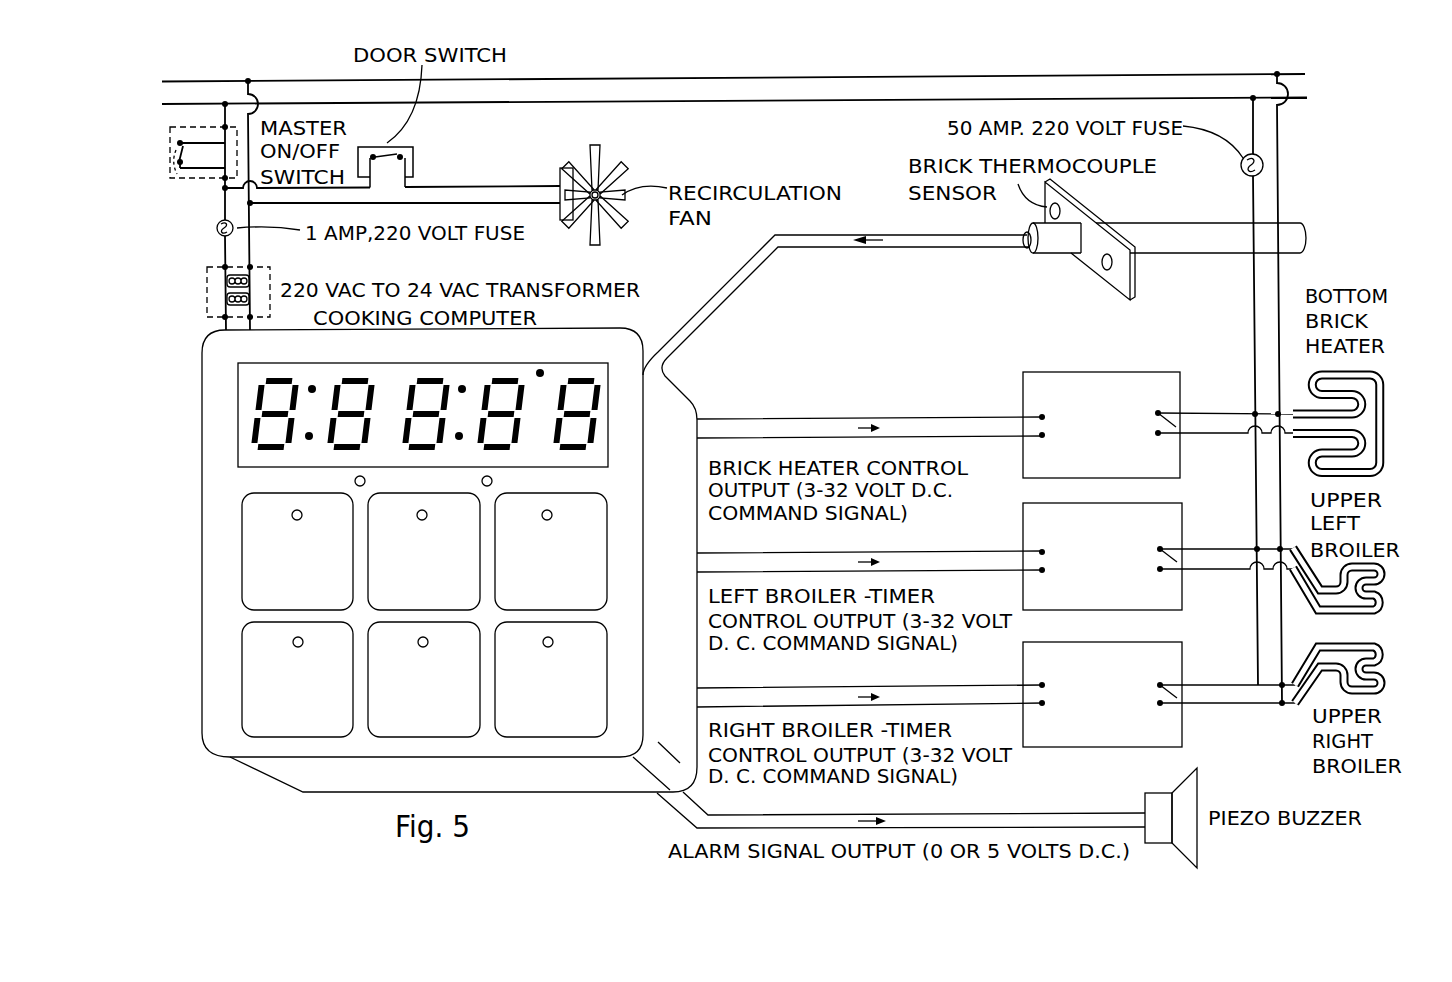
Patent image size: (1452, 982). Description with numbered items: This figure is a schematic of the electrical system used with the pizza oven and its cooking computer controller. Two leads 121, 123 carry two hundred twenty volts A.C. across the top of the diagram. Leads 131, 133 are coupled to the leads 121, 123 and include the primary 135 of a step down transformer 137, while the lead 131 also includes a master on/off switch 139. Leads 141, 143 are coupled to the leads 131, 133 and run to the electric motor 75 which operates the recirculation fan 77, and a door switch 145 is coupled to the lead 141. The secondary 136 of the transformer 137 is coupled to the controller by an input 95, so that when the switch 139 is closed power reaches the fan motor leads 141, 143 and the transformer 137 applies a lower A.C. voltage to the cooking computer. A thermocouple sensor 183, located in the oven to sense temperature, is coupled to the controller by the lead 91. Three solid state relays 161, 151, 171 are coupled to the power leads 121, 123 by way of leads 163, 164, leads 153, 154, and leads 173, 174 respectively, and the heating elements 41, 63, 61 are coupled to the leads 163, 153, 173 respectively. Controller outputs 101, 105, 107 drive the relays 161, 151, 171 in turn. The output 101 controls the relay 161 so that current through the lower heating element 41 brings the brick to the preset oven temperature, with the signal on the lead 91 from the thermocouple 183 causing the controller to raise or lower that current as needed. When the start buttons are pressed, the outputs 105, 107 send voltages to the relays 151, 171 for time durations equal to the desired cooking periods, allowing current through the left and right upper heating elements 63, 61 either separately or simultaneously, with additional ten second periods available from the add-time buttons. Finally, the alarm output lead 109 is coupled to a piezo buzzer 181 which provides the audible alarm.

The lead 121 is at (552, 77).
The lead 123 is at (468, 103).
The lead 131 is at (220, 112).
The lead 133 is at (253, 117).
The master on/off switch 139 is at (197, 169).
The step down transformer 137 is at (217, 267).
The primary 135 is at (228, 278).
The secondary 136 is at (228, 300).
The input 95 is at (225, 328).
The door switch 145 is at (398, 150).
The lead 141 is at (450, 187).
The lead 143 is at (535, 208).
The electric motor 75 is at (618, 179).
The fan 77 is at (615, 158).
The lead 91 is at (740, 292).
The thermocouple sensor 183 is at (1145, 253).
The output 101 is at (860, 418).
The output 105 is at (858, 552).
The output 107 is at (858, 685).
The output 109 is at (1062, 813).
The solid state relay 161 is at (1022, 375).
The lead 164 is at (1210, 411).
The lead 163 is at (1210, 436).
The solid state relay 151 is at (1022, 553).
The lead 154 is at (1210, 547).
The lead 153 is at (1215, 573).
The solid state relay 171 is at (1020, 680).
The lead 174 is at (1210, 683).
The lead 173 is at (1220, 706).
The heating element 41 is at (1388, 420).
The heating element 63 is at (1387, 583).
The heating element 61 is at (1390, 673).
The buzzer 181 is at (1197, 797).